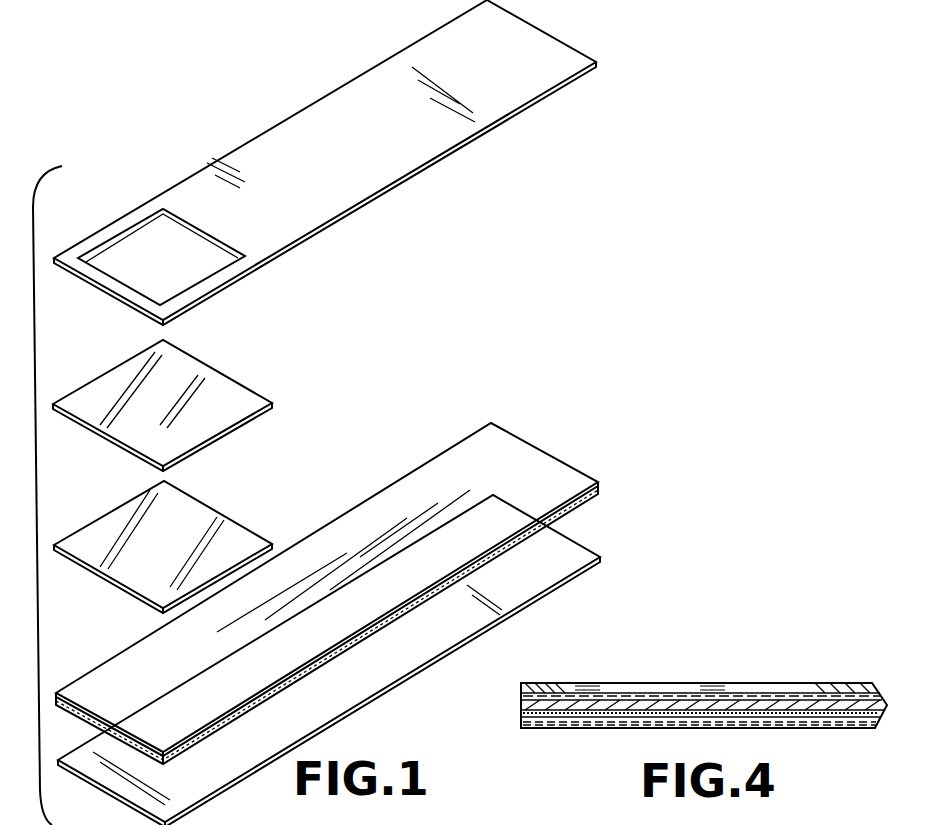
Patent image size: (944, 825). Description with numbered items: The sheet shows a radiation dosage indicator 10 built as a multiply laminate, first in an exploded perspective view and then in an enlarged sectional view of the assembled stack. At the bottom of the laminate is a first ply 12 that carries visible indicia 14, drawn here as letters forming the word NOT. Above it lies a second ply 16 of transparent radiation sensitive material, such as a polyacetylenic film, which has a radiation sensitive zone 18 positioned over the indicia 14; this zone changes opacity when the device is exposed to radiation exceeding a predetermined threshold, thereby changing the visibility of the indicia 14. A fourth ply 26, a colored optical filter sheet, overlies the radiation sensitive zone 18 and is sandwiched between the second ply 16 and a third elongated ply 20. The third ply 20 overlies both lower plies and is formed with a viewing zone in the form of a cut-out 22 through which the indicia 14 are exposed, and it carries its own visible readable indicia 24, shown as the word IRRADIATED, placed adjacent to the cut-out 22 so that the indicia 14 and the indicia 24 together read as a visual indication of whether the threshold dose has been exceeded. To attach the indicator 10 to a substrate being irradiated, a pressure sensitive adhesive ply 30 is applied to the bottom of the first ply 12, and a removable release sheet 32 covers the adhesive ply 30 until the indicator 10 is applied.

In FIG. 4, the radiation dosage indicator 10 is at (775, 628).
In FIG. 1, the first ply 12 is at (538, 466).
In FIG. 4, the first ply 12 is at (521, 714).
In FIG. 1, the visible indicia 14 is at (163, 658).
In FIG. 1, the second ply 16 is at (205, 505).
In FIG. 4, the second ply 16 is at (521, 705).
In FIG. 1, the radiation sensitive zone 18 is at (180, 547).
In FIG. 1, the third elongated ply 20 is at (548, 60).
In FIG. 4, the third elongated ply 20 is at (810, 683).
In FIG. 1, the cut-out 22 is at (182, 289).
In FIG. 4, the cut-out 22 is at (560, 683).
In FIG. 1, the visible readable indicia 24 is at (323, 137).
In FIG. 1, the fourth ply 26 is at (240, 392).
In FIG. 4, the fourth ply 26 is at (521, 696).
In FIG. 1, the pressure sensitive adhesive ply 30 is at (570, 514).
In FIG. 4, the pressure sensitive adhesive ply 30 is at (522, 722).
In FIG. 1, the removable release sheet 32 is at (215, 770).
In FIG. 4, the removable release sheet 32 is at (565, 728).